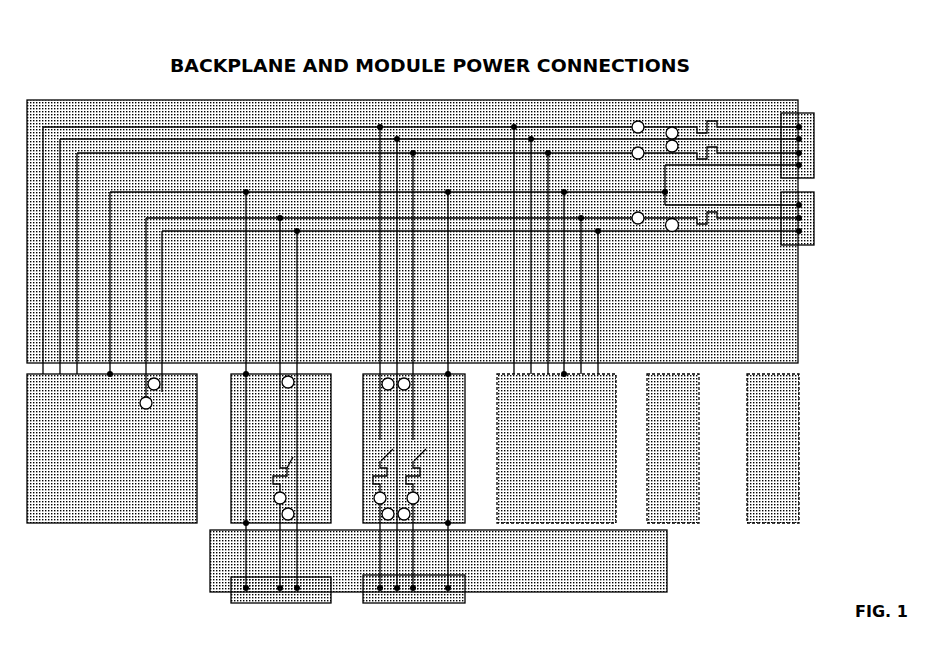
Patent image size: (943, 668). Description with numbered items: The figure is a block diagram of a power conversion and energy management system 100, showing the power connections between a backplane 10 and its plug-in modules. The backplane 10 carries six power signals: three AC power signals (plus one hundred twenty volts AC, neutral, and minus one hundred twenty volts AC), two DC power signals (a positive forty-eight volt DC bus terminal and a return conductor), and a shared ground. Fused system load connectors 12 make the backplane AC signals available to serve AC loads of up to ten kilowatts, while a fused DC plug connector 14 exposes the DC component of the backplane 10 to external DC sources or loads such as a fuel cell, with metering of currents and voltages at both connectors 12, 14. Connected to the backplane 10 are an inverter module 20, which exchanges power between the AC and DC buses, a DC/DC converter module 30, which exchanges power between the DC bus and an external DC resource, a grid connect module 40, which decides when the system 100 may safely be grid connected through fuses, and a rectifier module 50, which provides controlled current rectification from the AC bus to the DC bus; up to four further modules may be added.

The power conversion and energy management system 100 is at (779, 73).
The backplane 10 is at (803, 333).
The system load connectors 12 is at (810, 113).
The DC plug connector 14 is at (805, 246).
The inverter module 20 is at (68, 525).
The DC/DC converter module 30 is at (230, 420).
The grid connect module 40 is at (363, 420).
The rectifier module 50 is at (497, 425).